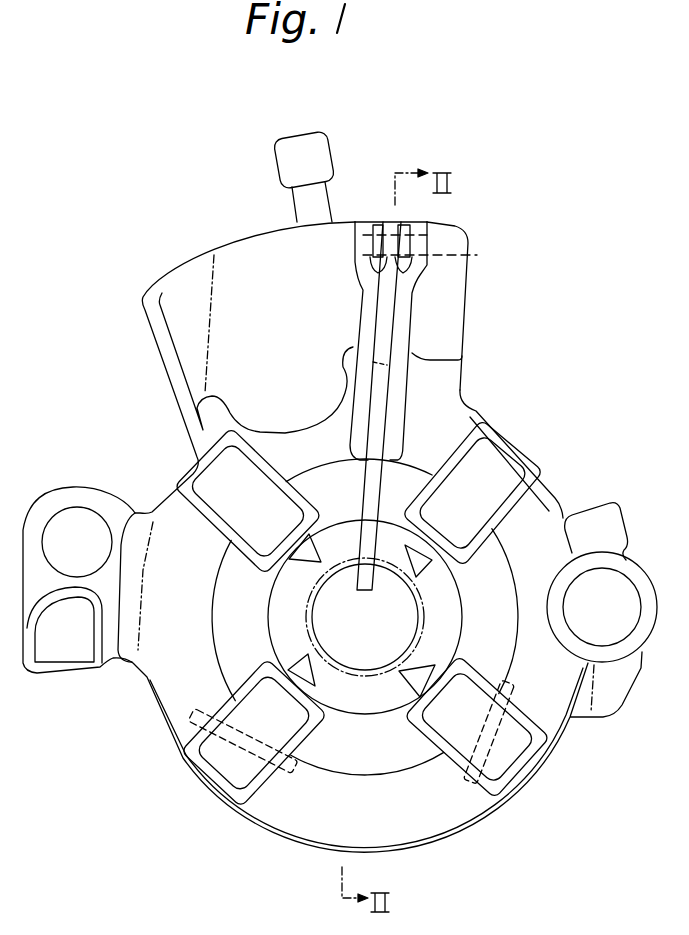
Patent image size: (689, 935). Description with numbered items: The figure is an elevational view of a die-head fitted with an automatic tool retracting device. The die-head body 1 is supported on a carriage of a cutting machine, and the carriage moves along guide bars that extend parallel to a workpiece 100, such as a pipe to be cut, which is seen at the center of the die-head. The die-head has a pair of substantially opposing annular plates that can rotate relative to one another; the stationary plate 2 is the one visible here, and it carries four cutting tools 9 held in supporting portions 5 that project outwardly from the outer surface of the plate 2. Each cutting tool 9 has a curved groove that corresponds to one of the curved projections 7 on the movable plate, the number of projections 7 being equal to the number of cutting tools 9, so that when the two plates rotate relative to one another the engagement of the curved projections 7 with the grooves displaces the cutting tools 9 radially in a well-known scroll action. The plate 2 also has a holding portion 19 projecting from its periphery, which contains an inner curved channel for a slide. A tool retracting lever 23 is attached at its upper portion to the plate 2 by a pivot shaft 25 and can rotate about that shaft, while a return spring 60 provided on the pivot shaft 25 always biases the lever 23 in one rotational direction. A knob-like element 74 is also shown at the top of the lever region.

The die-head body 1 is at (450, 416).
The stationary plate 2 is at (553, 515).
The supporting portions 5 is at (517, 470).
The curved projections 7 is at (190, 716).
The cutting tools 9 is at (306, 555).
The holding portion 19 is at (452, 341).
The tool retracting lever 23 is at (384, 307).
The pivot shaft 25 is at (437, 251).
The return spring 60 is at (408, 240).
The knob 74 is at (322, 140).
The workpiece 100 is at (422, 600).